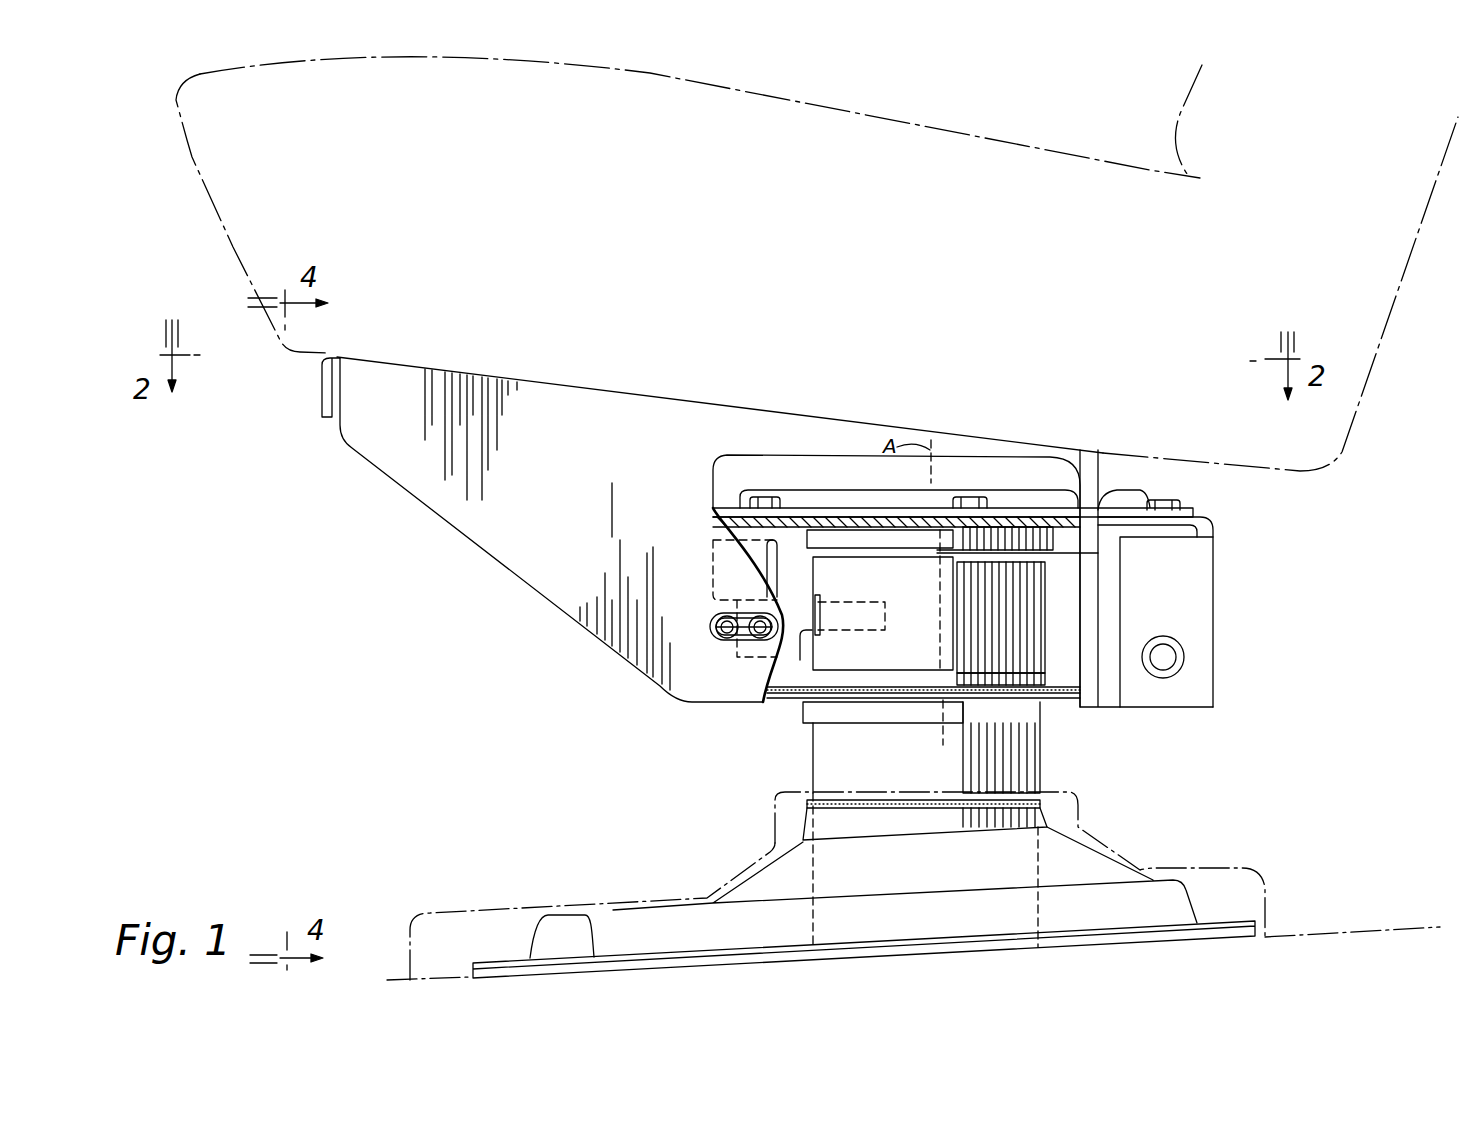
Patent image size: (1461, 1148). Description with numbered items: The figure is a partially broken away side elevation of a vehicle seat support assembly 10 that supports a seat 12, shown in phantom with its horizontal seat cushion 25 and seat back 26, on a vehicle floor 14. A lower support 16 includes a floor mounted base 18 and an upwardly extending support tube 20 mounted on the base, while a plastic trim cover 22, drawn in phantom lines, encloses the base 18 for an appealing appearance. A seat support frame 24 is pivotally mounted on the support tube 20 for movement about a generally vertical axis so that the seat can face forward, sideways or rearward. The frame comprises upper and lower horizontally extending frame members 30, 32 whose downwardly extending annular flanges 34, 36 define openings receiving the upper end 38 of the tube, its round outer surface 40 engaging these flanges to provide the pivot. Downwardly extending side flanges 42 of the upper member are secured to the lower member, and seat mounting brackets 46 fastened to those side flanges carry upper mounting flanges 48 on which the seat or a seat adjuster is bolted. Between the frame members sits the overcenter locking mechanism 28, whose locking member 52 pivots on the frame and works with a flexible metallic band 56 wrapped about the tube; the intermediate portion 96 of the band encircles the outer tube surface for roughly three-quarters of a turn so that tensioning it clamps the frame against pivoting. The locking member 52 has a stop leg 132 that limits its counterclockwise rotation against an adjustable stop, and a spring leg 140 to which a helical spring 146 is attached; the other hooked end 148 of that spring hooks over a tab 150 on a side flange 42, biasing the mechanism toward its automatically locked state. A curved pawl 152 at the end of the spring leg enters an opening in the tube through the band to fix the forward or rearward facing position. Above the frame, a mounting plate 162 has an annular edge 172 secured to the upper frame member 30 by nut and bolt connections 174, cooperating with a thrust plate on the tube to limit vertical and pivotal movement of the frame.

The vehicle seat support assembly 10 is at (452, 626).
The seat 12 is at (1313, 476).
The vehicle floor 14 is at (1337, 928).
The lower support 16 is at (705, 874).
The floor mounted base 18 is at (1177, 890).
The support tube 20 is at (1057, 748).
The plastic trim cover 22 is at (1073, 793).
The seat support frame 24 is at (547, 618).
The horizontal seat cushion 25 is at (872, 82).
The seat back 26 is at (1170, 93).
The overcenter locking mechanism 28 is at (801, 518).
The upper frame member 30 is at (717, 520).
The lower frame member 32 is at (853, 693).
The annular flange of upper frame member 34 is at (920, 540).
The annular flange of lower frame member 36 is at (910, 713).
The upper end of support tube 38 is at (1050, 558).
The round outer surface 40 is at (862, 533).
The side flanges 42 is at (1108, 585).
The seat mounting brackets 46 is at (647, 673).
The upper mounting flanges 48 is at (607, 390).
The locking member 52 is at (790, 600).
The flexible metallic band 56 is at (1057, 643).
The intermediate portion of band 96 is at (1013, 637).
The stop leg 132 is at (772, 540).
The spring leg 140 is at (807, 653).
The helical spring 146 is at (745, 598).
The hooked end of spring 148 is at (745, 643).
The tab 150 is at (717, 617).
The curved pawl 152 is at (896, 637).
The mounting plate 162 is at (1044, 477).
The annular edge 172 is at (1188, 512).
The nut and bolt connections 174 is at (1162, 500).